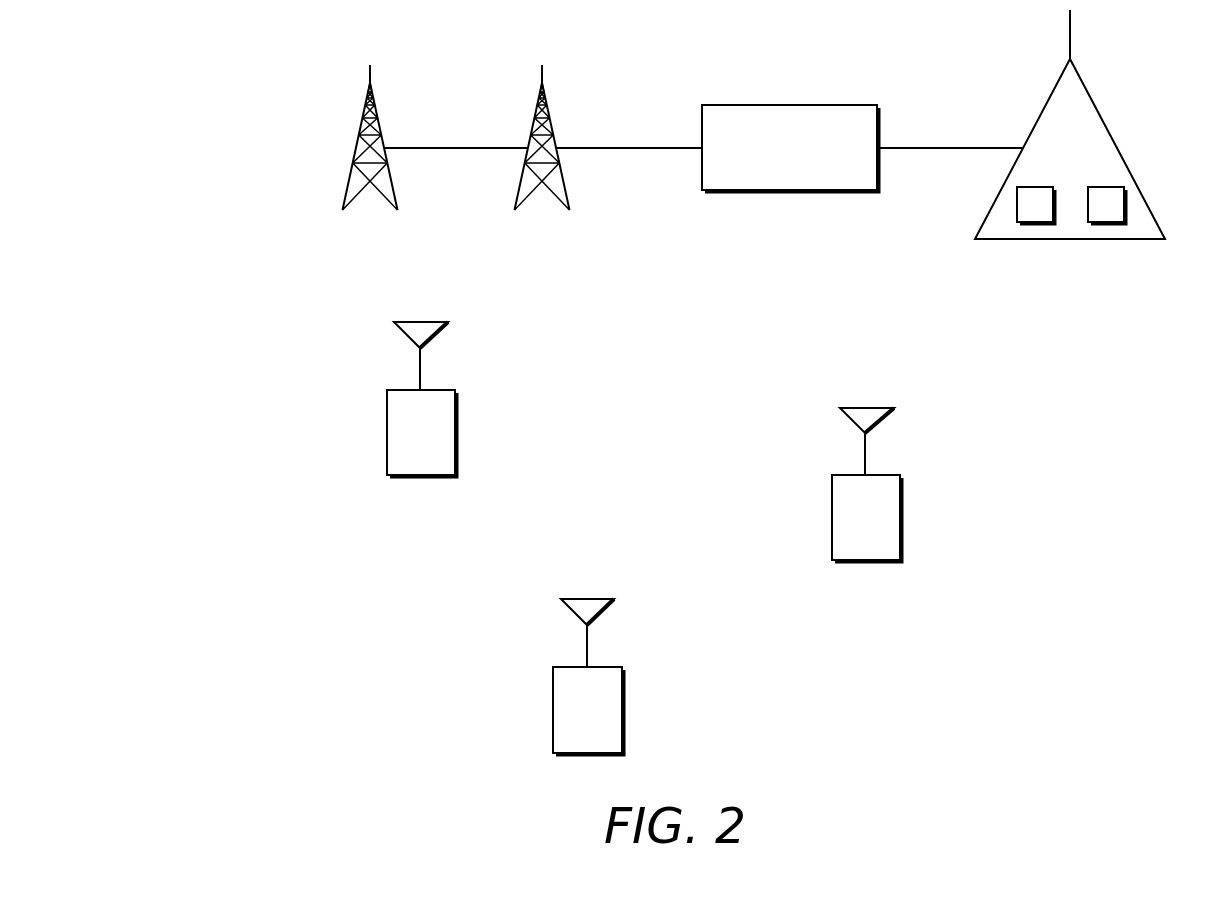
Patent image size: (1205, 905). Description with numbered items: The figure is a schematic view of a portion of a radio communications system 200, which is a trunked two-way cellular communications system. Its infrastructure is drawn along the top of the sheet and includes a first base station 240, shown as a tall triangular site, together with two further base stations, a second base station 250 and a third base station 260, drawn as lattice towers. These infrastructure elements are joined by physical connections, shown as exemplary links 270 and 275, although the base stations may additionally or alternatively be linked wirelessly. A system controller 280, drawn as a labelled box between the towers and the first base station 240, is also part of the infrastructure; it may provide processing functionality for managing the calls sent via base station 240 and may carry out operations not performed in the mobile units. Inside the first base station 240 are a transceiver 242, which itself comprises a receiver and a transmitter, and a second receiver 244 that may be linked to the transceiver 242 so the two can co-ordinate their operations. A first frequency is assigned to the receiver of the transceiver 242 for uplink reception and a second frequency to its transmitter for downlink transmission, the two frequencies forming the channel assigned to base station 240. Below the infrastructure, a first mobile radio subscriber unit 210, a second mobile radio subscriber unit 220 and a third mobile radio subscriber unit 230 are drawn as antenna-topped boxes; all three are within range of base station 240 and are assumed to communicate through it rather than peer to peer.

The radio communications system 200 is at (124, 114).
The first mobile radio subscriber unit 210 is at (882, 475).
The second mobile radio subscriber unit 220 is at (605, 667).
The third mobile radio subscriber unit 230 is at (401, 389).
The first base station 240 is at (1103, 113).
The transceiver 242 is at (1016, 203).
The second receiver 244 is at (1127, 203).
The second base station 250 is at (548, 112).
The third base station 260 is at (356, 150).
The link 270 is at (457, 151).
The link 275 is at (949, 146).
The system controller 280 is at (860, 105).